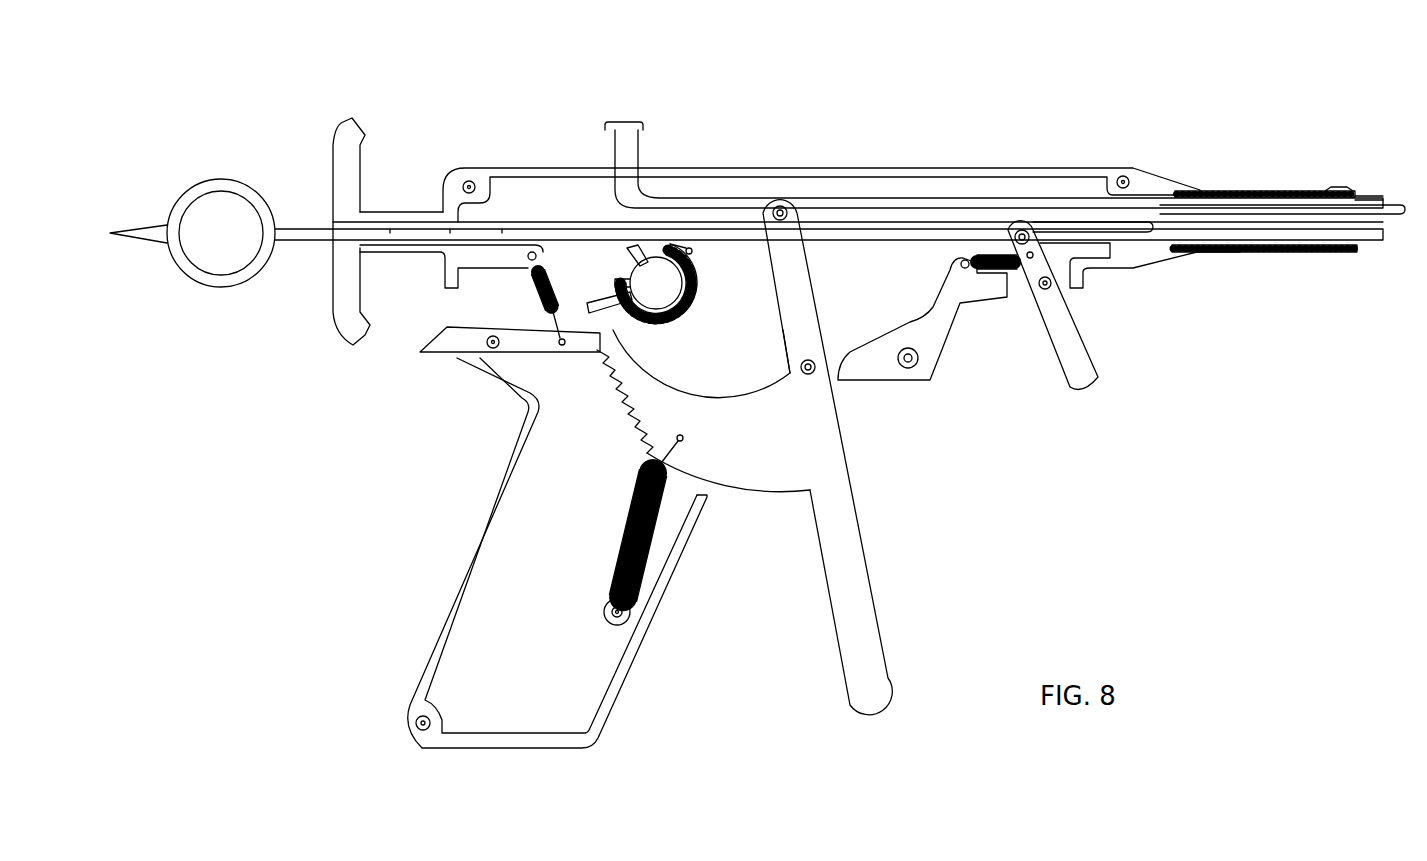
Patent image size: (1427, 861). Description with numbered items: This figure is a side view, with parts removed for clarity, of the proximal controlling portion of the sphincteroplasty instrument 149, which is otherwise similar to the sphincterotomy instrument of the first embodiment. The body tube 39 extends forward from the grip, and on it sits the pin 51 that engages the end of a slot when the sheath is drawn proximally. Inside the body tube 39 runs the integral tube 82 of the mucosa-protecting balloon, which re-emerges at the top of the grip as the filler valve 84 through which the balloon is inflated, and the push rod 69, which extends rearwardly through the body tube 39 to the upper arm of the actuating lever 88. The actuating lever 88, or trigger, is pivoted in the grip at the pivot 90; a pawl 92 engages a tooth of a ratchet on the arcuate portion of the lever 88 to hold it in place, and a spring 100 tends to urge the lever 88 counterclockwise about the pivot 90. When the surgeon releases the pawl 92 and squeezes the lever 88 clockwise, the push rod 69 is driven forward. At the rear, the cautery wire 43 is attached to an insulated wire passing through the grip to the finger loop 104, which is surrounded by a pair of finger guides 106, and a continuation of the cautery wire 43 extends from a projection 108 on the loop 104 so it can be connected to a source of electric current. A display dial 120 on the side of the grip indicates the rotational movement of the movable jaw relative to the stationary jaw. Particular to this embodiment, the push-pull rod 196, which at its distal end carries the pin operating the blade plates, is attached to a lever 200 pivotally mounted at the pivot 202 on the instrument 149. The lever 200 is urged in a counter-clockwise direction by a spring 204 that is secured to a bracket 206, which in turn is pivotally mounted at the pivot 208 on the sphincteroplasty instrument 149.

The sphincteroplasty instrument 149 is at (867, 110).
The finger loop 104 is at (213, 178).
The finger guides 106 is at (332, 153).
The projection 108 is at (143, 227).
The cautery wire 43 is at (103, 236).
The filler valve 84 is at (614, 147).
The body tube 39 is at (1230, 190).
The pin 51 is at (1340, 187).
The integral tube 82 is at (1370, 195).
The push rod 69 is at (1398, 204).
The push-pull rod 196 is at (1370, 254).
The display dial 120 is at (672, 295).
The pawl 92 is at (440, 350).
The spring 100 is at (625, 540).
The actuating lever 88 is at (803, 462).
The pivot 90 is at (812, 375).
The bracket 206 is at (928, 333).
The bracket pivot 208 is at (912, 368).
The spring 204 is at (1015, 275).
The lever pivot 202 is at (1050, 290).
The lever 200 is at (1078, 360).